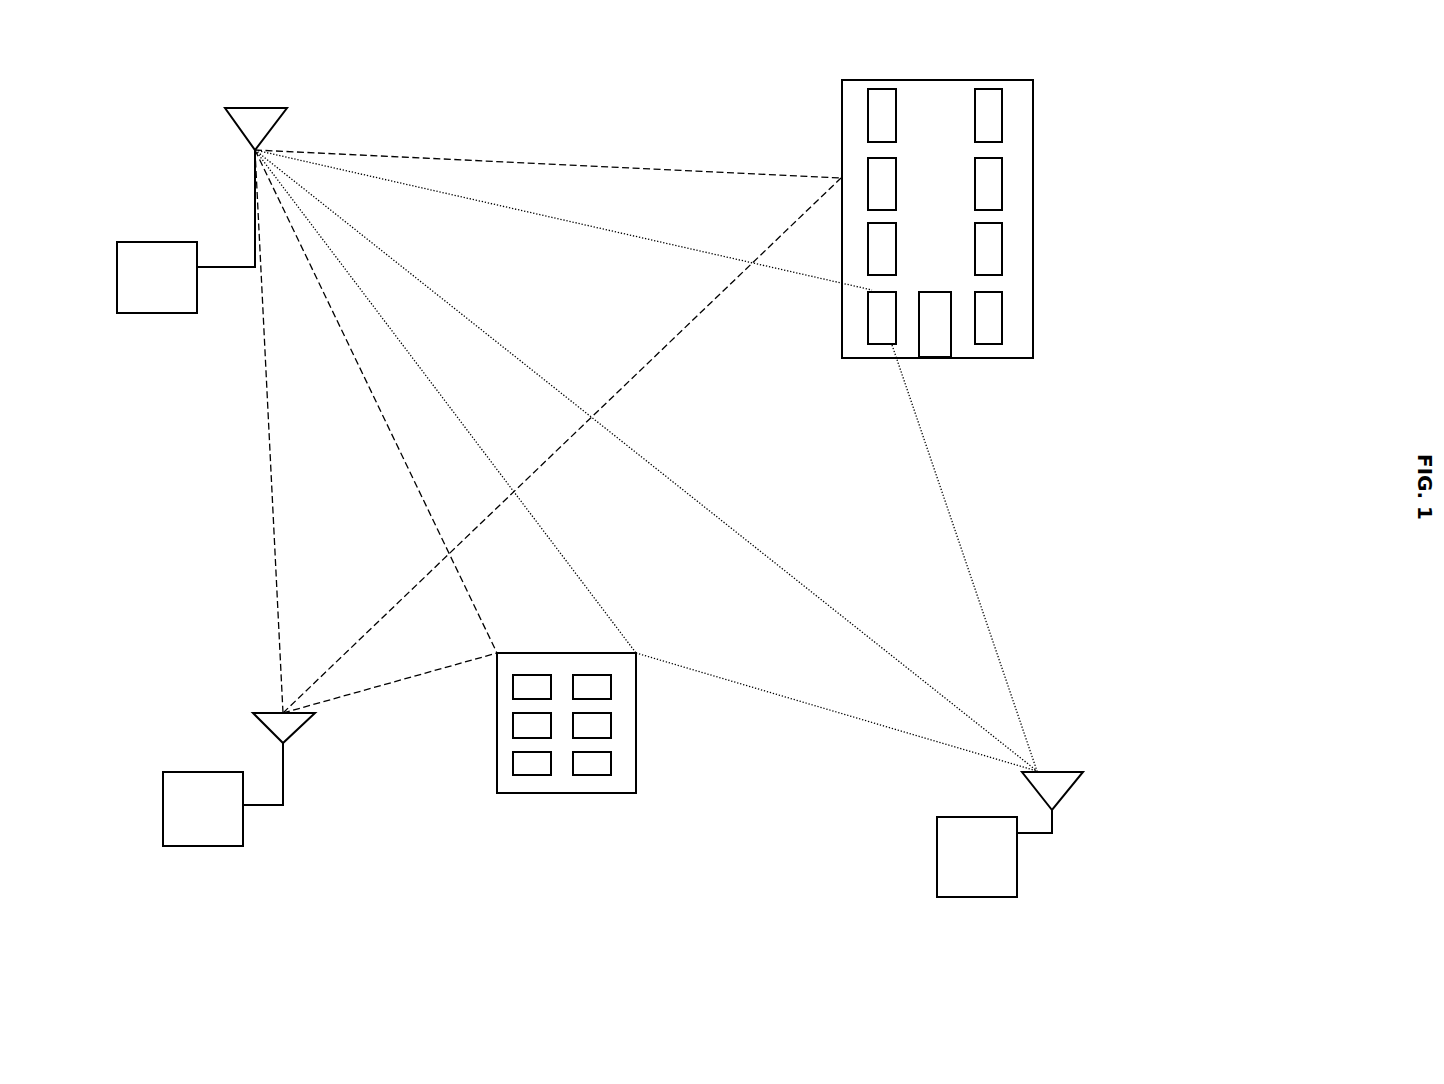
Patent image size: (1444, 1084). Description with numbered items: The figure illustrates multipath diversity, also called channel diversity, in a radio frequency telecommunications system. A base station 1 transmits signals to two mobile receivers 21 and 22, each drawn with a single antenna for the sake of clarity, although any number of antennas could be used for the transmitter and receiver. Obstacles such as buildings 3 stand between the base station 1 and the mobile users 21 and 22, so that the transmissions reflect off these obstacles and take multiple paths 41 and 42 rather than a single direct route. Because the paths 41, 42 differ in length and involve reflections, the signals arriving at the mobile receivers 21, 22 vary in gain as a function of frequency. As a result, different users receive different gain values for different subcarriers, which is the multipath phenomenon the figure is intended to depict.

The base station 1 is at (137, 230).
The buildings 3 is at (1033, 158).
The mobile receiver 21 is at (995, 901).
The mobile receiver 22 is at (186, 856).
The paths 41 is at (882, 730).
The paths 42 is at (417, 676).